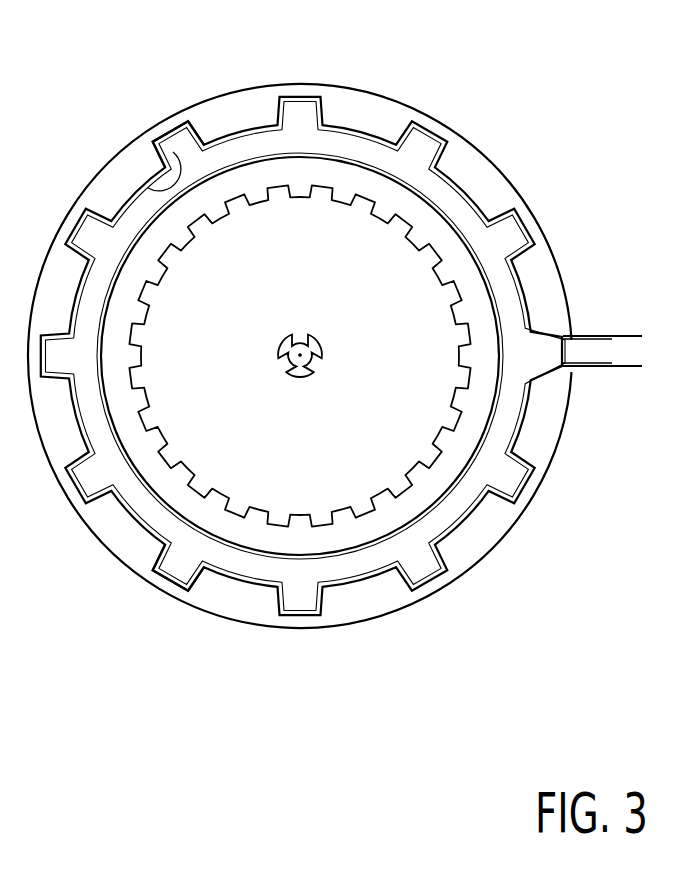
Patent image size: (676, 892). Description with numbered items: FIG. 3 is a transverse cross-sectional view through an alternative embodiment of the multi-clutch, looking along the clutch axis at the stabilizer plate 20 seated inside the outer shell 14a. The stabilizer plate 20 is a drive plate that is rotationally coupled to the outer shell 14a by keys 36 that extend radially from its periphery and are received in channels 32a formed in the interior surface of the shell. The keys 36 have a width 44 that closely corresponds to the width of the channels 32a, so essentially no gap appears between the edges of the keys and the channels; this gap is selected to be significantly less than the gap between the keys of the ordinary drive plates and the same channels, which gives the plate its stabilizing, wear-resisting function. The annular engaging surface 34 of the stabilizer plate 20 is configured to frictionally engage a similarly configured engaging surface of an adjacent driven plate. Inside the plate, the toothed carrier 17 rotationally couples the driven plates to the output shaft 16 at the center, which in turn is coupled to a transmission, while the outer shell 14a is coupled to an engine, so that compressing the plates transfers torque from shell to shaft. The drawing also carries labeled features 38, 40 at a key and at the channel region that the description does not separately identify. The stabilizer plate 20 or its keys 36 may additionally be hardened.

The outer shell 14a is at (554, 242).
The stabilizer plate 20 is at (441, 168).
The channels 32a is at (186, 130).
The keys 36 is at (148, 188).
The lower ring tab 38 is at (164, 579).
The engaging surface 34 is at (172, 492).
The carrier 17 is at (352, 430).
The output shaft 16 is at (323, 348).
The slot inner edge 40 is at (597, 334).
The width 44 is at (636, 334).